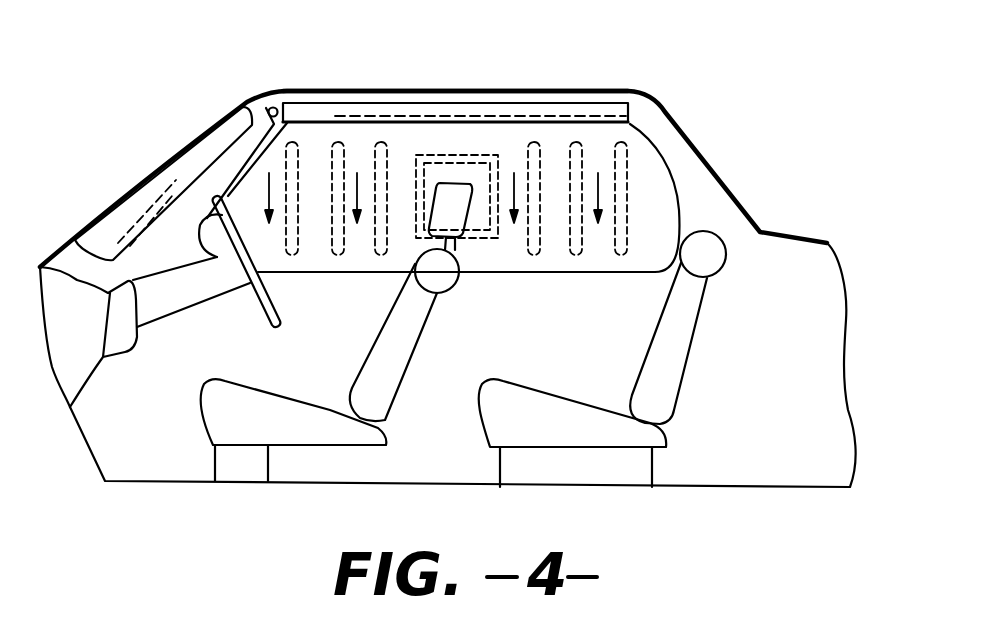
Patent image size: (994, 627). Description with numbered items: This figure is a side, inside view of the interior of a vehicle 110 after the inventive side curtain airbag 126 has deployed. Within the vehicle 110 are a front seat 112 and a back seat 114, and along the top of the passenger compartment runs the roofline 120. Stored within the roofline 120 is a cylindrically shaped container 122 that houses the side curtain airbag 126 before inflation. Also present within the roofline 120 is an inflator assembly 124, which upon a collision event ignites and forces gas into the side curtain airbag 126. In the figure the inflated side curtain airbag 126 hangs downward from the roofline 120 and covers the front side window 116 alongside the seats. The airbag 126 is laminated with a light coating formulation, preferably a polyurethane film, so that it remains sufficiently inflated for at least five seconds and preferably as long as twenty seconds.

The vehicle 110 is at (138, 104).
The front seat 112 is at (267, 478).
The back seat 114 is at (600, 490).
The front side window 116 is at (207, 218).
The roofline 120 is at (420, 90).
The cylindrically shaped container 122 is at (306, 100).
The inflator assembly 124 is at (265, 101).
The side curtain airbag 126 is at (660, 155).